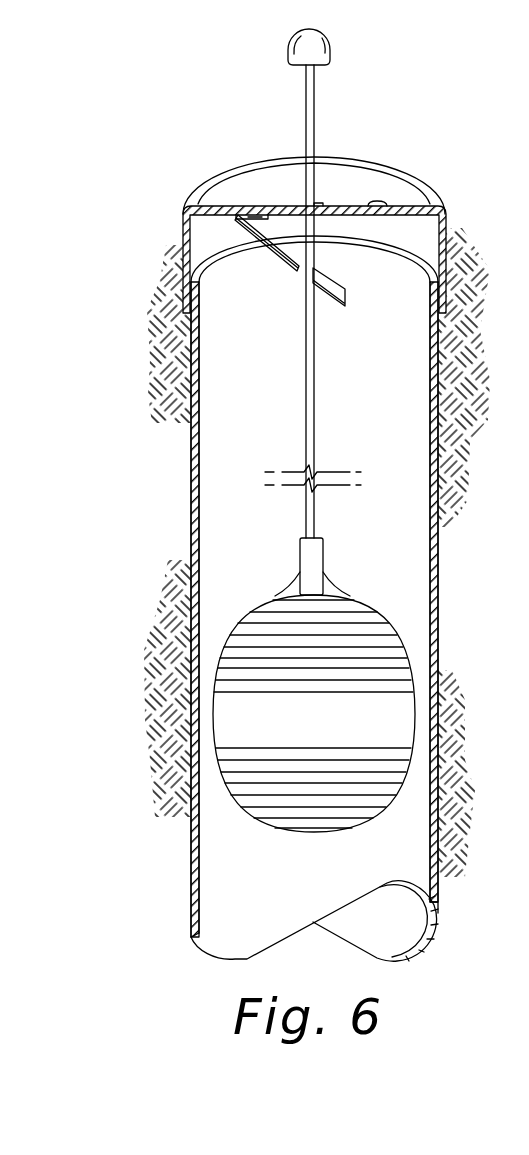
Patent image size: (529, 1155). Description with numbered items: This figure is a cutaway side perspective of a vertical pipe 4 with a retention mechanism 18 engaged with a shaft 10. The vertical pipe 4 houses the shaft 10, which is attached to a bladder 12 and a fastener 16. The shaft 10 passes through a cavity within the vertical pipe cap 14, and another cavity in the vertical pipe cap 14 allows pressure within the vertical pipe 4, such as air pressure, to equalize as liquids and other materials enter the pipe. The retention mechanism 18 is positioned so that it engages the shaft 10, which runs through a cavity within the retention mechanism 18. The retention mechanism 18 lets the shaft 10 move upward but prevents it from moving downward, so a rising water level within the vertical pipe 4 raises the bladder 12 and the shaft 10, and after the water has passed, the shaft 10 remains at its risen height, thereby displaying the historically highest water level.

The vertical pipe 4 is at (191, 873).
The shaft 10 is at (306, 431).
The bladder 12 is at (213, 723).
The vertical pipe cap 14 is at (228, 175).
The fastener 16 is at (288, 45).
The retention mechanism 18 is at (292, 258).